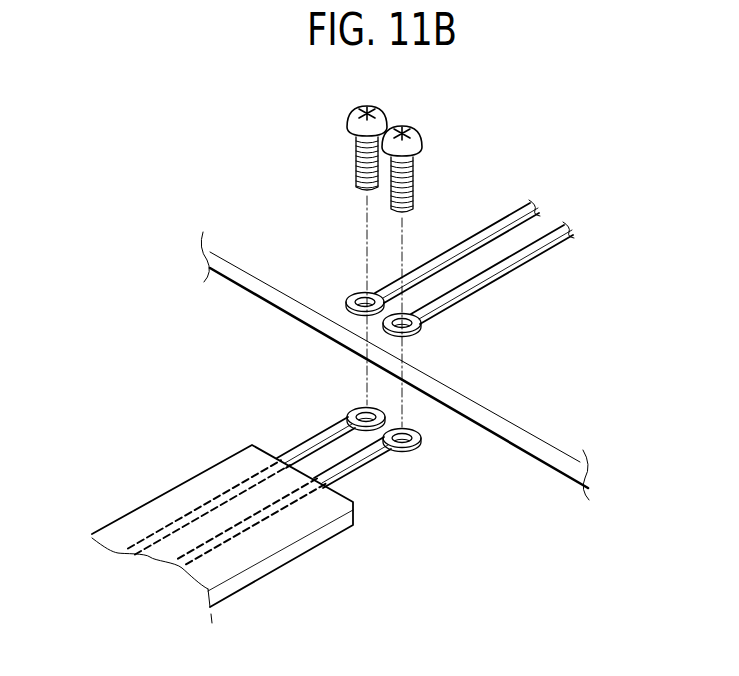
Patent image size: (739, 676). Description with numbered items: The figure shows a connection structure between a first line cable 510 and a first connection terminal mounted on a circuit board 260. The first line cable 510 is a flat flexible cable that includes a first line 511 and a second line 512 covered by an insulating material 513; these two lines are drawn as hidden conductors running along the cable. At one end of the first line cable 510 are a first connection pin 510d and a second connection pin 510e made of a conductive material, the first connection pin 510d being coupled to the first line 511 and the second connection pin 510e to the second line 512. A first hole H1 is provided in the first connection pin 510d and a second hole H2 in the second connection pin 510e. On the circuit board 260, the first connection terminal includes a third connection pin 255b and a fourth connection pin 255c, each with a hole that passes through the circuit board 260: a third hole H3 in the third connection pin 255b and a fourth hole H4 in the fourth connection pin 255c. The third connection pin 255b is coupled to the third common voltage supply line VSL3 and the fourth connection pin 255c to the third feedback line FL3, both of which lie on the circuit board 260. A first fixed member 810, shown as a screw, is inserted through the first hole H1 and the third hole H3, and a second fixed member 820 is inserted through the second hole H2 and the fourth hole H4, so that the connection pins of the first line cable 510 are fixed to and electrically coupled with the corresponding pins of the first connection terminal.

The circuit board 260 is at (550, 452).
The first fixed member 810 is at (353, 122).
The second fixed member 820 is at (421, 141).
The third common voltage supply line VSL3 is at (493, 231).
The third feedback line FL3 is at (493, 268).
The third connection pin 255b is at (350, 304).
The fourth connection pin 255c is at (414, 332).
The third hole H3 is at (363, 296).
The fourth hole H4 is at (421, 323).
The first line cable 510 is at (192, 402).
The first connection pin 510d is at (357, 407).
The second connection pin 510e is at (408, 451).
The first hole H1 is at (348, 418).
The second hole H2 is at (421, 439).
The first line 511 is at (160, 538).
The second line 512 is at (222, 545).
The insulating material 513 is at (223, 475).